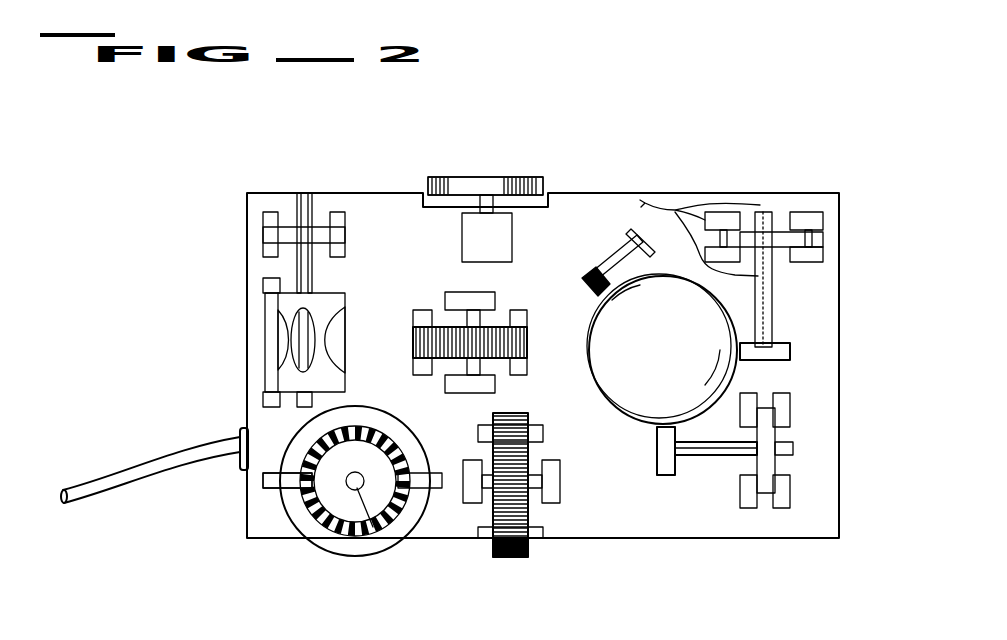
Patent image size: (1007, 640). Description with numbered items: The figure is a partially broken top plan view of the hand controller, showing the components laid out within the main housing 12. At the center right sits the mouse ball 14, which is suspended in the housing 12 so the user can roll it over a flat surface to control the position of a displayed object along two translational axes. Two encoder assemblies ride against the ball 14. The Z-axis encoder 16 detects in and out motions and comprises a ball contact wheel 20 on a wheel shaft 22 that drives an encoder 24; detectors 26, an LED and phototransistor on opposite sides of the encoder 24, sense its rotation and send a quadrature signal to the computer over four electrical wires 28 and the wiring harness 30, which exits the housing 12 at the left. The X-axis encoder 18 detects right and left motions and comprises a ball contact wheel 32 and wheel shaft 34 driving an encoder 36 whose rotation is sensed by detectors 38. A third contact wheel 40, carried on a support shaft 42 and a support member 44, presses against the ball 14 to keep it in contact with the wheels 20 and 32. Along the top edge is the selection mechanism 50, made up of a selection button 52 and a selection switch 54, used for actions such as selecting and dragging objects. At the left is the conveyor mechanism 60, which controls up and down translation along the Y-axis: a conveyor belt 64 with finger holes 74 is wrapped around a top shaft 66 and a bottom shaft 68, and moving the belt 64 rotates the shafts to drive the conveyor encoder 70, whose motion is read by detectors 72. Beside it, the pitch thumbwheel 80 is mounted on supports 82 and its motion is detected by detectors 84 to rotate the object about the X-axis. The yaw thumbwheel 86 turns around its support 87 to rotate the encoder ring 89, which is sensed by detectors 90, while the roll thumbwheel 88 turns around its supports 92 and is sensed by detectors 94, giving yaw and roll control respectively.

The main housing 12 is at (258, 532).
The mouse ball 14 is at (628, 402).
The Z-axis encoder 16 is at (790, 330).
The X-axis encoder 18 is at (812, 432).
The ball contact wheel 20 is at (792, 352).
The wheel shaft 22 is at (763, 305).
The encoder 24 is at (805, 258).
The detectors 26 is at (815, 255).
The electrical wires 28 is at (676, 208).
The wiring harness 30 is at (126, 482).
The ball contact wheel 32 is at (662, 455).
The wheel shaft 34 is at (710, 456).
The encoder 36 is at (770, 467).
The detectors 38 is at (782, 507).
The third contact wheel 40 is at (584, 288).
The support shaft 42 is at (607, 268).
The support member 44 is at (640, 240).
The selection mechanism 50 is at (452, 172).
The selection button 52 is at (497, 186).
The selection switch 54 is at (502, 245).
The conveyor mechanism 60 is at (255, 305).
The conveyor belt 64 is at (263, 385).
The top shaft 66 is at (263, 400).
The bottom shaft 68 is at (313, 213).
The conveyor encoder 70 is at (343, 236).
The detectors 72 is at (262, 216).
The finger holes 74 is at (338, 348).
The pitch thumbwheel 80 is at (418, 340).
The supports 82 is at (470, 385).
The detectors 84 is at (520, 370).
The yaw thumbwheel 86 is at (355, 557).
The support 87 is at (376, 535).
The roll thumbwheel 88 is at (512, 558).
The encoder ring 89 is at (326, 526).
The detectors 90 is at (270, 497).
The supports 92 is at (549, 480).
The detectors 94 is at (537, 433).